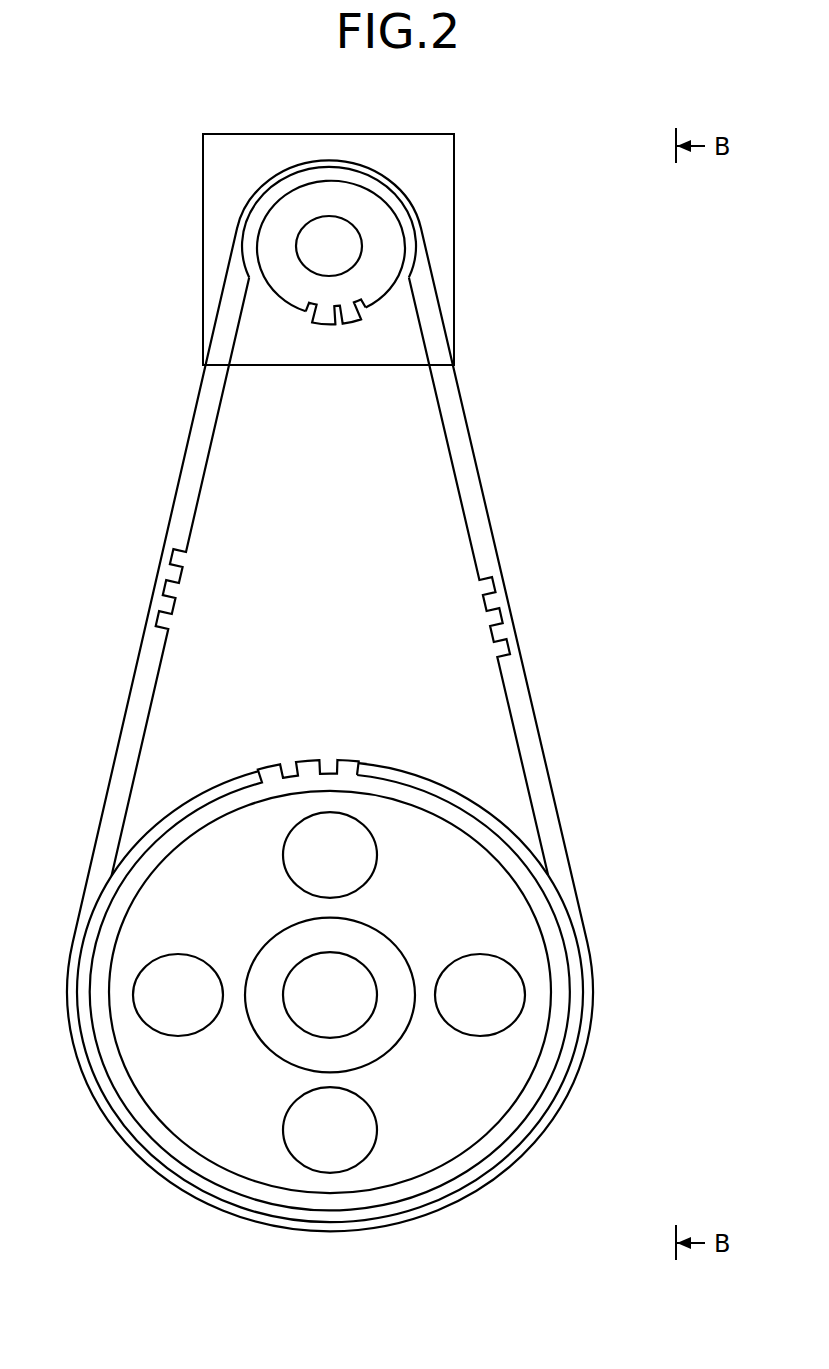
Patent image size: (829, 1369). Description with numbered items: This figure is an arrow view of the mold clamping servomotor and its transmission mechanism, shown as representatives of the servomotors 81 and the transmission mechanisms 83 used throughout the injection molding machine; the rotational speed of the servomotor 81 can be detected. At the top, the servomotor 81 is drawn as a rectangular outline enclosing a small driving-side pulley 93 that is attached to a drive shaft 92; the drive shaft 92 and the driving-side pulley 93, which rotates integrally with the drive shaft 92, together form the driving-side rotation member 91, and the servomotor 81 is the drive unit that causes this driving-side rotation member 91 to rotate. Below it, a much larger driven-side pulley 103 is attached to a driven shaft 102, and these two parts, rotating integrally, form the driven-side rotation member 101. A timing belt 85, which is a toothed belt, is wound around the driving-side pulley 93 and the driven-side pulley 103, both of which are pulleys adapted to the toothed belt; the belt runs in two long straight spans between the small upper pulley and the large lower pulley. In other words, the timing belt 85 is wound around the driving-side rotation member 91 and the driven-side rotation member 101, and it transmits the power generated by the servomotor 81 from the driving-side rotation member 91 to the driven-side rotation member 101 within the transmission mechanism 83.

The servomotor 81 is at (404, 134).
The transmission mechanism 83 is at (527, 506).
The timing belt 85 is at (177, 490).
The driving-side rotation member 91 is at (325, 325).
The drive shaft 92 is at (306, 268).
The driving-side pulley 93 is at (342, 300).
The driven-side rotation member 101 is at (330, 923).
The driven shaft 102 is at (294, 963).
The driven-side pulley 103 is at (319, 810).